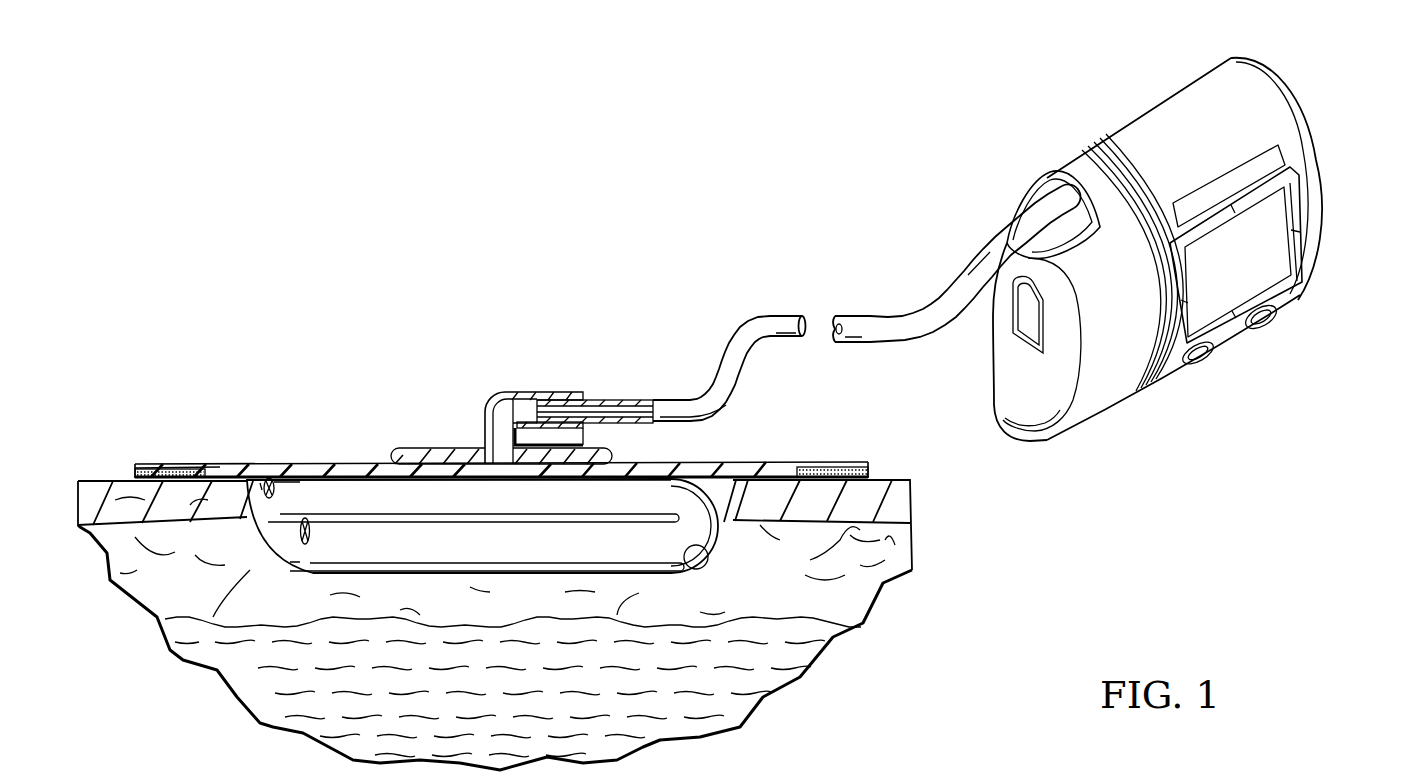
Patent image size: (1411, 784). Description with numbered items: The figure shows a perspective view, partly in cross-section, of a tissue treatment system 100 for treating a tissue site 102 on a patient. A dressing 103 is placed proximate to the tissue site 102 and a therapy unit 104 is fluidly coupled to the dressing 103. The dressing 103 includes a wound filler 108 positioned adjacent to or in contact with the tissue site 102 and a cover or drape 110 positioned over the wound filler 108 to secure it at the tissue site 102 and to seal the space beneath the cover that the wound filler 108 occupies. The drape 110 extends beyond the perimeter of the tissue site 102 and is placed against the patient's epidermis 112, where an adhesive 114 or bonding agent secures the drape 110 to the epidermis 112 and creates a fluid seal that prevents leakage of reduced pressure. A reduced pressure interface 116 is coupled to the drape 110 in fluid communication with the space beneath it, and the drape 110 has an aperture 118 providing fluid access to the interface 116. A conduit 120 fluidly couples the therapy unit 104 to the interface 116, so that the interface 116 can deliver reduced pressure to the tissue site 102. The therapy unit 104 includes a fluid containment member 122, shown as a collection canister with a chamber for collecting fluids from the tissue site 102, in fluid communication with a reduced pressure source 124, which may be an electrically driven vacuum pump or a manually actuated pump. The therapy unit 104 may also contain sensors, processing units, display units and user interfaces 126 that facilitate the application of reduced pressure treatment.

The tissue treatment system 100 is at (572, 383).
The tissue site 102 is at (707, 552).
The dressing 103 is at (218, 458).
The therapy unit 104 is at (1188, 260).
The wound filler 108 is at (310, 480).
The drape 110 is at (170, 462).
The epidermis 112 is at (908, 496).
The adhesive 114 is at (135, 472).
The reduced pressure interface 116 is at (515, 393).
The aperture 118 is at (490, 425).
The conduit 120 is at (658, 399).
The fluid containment member 122 is at (1092, 416).
The reduced pressure source 124 is at (1304, 125).
The user interfaces 126 is at (1282, 207).